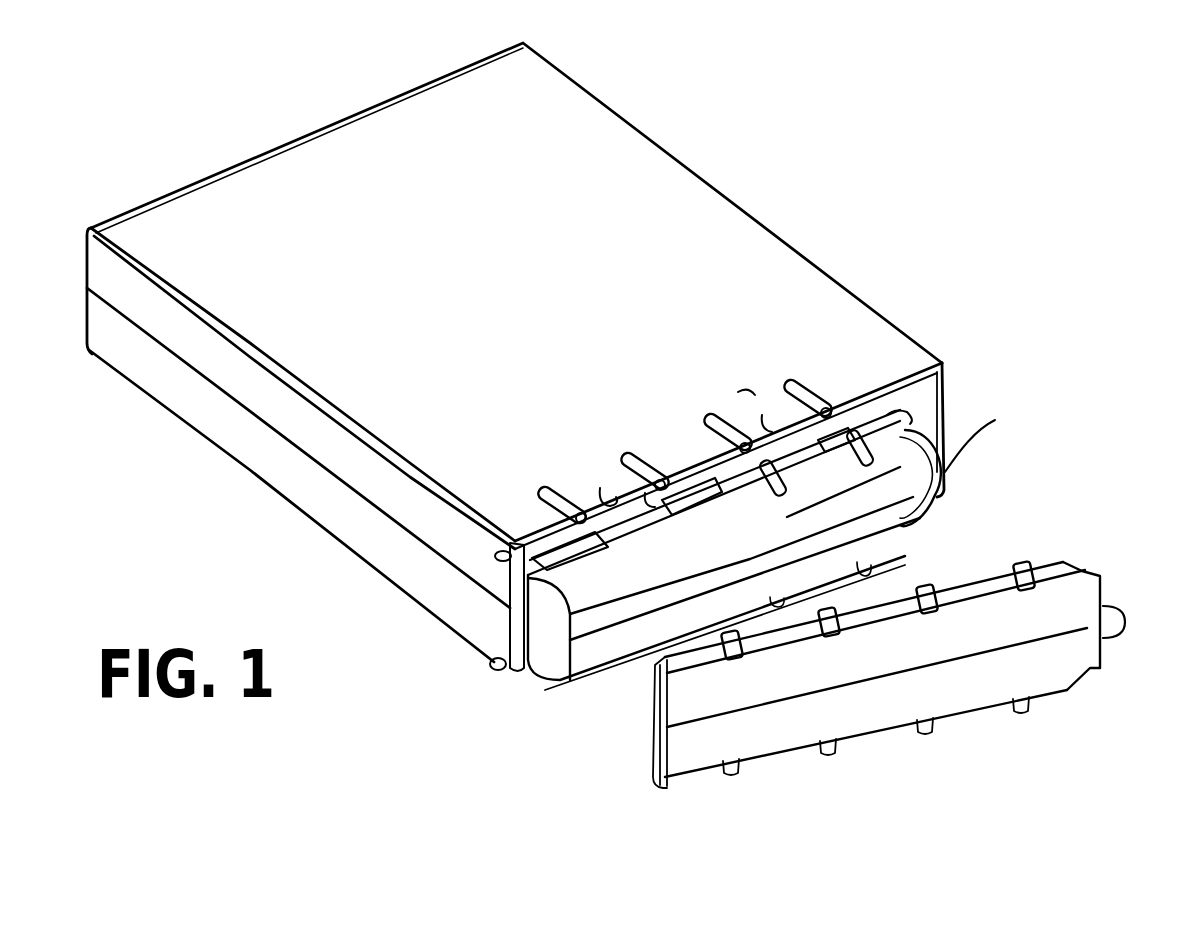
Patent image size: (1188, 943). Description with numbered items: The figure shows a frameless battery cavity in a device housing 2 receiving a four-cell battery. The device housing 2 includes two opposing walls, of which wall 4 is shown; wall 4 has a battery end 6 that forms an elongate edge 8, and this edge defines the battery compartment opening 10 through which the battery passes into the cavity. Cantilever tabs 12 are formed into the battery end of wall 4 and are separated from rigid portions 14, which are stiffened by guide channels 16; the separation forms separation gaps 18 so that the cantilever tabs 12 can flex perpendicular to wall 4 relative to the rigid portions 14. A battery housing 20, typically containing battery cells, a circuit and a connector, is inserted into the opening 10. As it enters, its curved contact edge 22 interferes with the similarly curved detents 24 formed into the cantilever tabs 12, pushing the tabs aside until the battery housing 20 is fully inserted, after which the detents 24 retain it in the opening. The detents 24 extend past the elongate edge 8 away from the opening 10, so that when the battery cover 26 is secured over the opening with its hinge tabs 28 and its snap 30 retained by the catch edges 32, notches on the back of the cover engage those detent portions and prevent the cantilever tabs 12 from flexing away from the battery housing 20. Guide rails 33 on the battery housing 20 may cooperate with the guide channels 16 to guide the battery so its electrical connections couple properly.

The device housing 2 is at (858, 98).
The wall 4 is at (622, 165).
The battery end 6 is at (933, 297).
The elongate edge 8 is at (947, 357).
The battery compartment opening 10 is at (697, 480).
The cantilever tabs 12 is at (583, 483).
The rigid portions 14 is at (522, 513).
The guide channels 16 is at (537, 487).
The separation gaps 18 is at (777, 377).
The battery housing 20 is at (930, 508).
The contact edge 22 is at (672, 527).
The detents 24 is at (689, 452).
The battery cover 26 is at (1085, 578).
The hinge tabs 28 is at (648, 673).
The snap 30 is at (1120, 621).
The catch edges 32 is at (912, 413).
The guide rails 33 is at (772, 495).